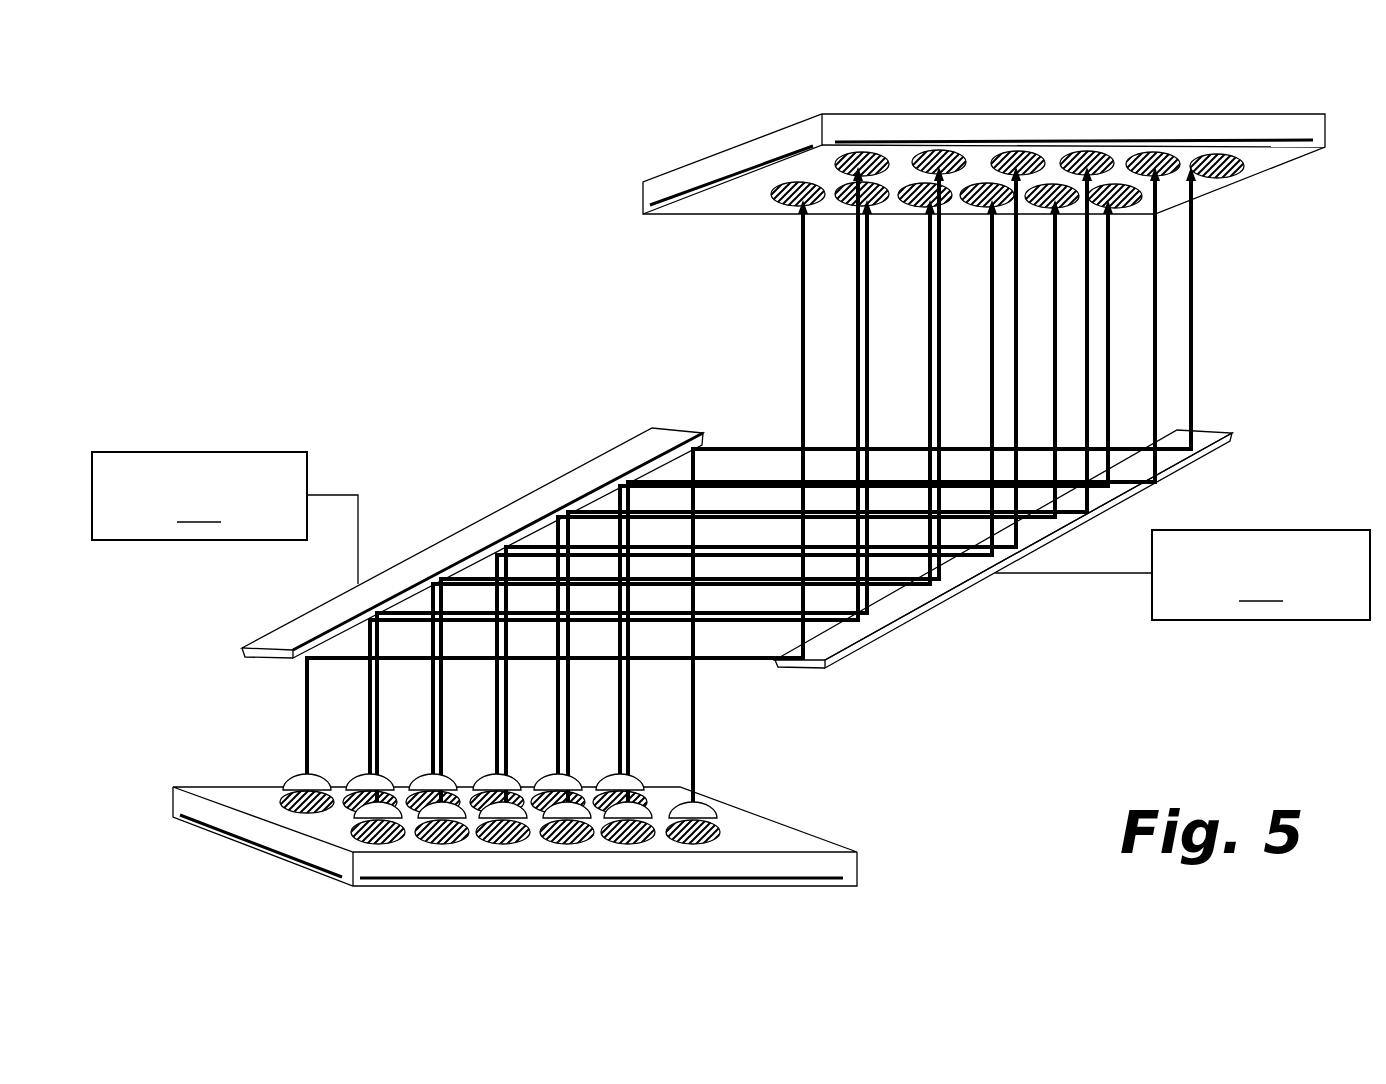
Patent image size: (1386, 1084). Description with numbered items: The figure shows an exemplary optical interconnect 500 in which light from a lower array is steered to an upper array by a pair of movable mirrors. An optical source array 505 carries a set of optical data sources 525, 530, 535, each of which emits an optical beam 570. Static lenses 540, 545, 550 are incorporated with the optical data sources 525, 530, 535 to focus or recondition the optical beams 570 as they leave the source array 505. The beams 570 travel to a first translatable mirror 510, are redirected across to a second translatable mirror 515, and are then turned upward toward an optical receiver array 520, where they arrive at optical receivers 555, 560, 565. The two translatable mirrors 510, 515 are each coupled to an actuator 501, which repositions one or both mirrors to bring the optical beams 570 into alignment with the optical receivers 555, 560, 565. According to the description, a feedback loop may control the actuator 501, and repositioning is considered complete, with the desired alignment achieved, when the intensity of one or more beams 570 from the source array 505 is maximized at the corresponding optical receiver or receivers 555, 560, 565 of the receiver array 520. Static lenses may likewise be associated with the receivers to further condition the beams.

The optical interconnect 500 is at (462, 253).
The actuator 501 is at (731, 536).
The optical source array 505 is at (740, 838).
The translatable mirror 510 is at (433, 562).
The translatable mirror 515 is at (890, 617).
The optical receiver array 520 is at (712, 205).
The optical data source 525 is at (700, 862).
The optical data source 530 is at (638, 862).
The optical data source 535 is at (567, 862).
The static lens 540 is at (695, 808).
The static lens 545 is at (643, 815).
The static lens 550 is at (585, 810).
The optical receiver 555 is at (1225, 158).
The optical receiver 560 is at (1145, 158).
The optical receiver 565 is at (1078, 158).
The optical beams 570 is at (768, 401).